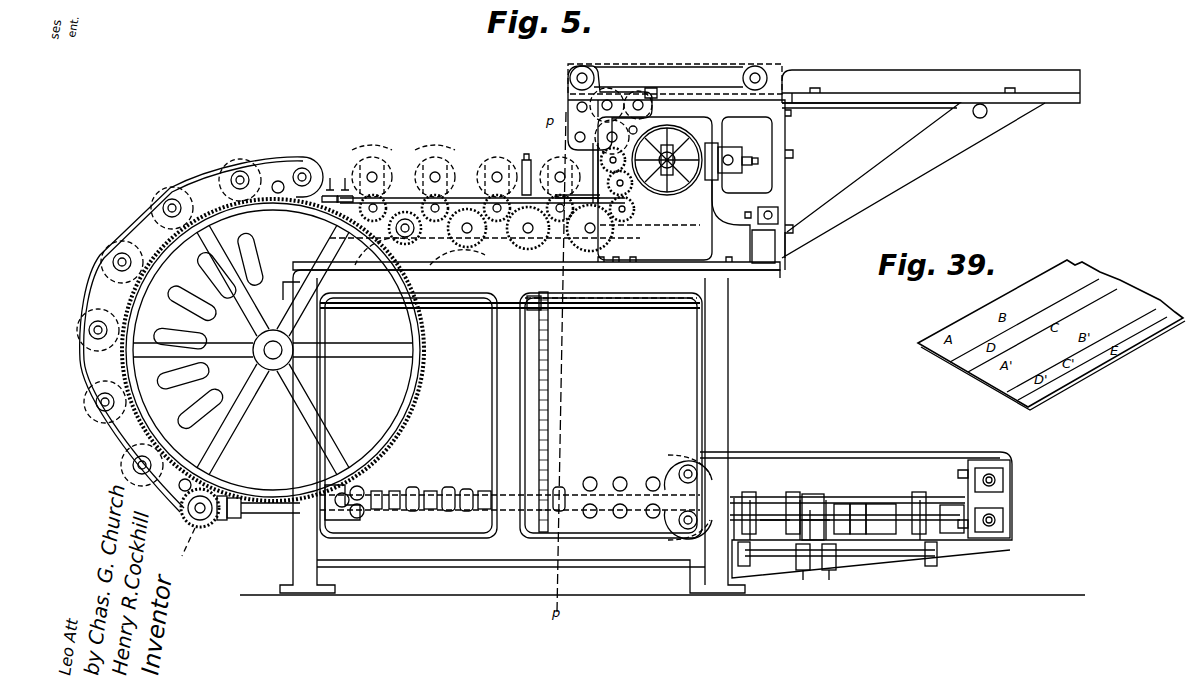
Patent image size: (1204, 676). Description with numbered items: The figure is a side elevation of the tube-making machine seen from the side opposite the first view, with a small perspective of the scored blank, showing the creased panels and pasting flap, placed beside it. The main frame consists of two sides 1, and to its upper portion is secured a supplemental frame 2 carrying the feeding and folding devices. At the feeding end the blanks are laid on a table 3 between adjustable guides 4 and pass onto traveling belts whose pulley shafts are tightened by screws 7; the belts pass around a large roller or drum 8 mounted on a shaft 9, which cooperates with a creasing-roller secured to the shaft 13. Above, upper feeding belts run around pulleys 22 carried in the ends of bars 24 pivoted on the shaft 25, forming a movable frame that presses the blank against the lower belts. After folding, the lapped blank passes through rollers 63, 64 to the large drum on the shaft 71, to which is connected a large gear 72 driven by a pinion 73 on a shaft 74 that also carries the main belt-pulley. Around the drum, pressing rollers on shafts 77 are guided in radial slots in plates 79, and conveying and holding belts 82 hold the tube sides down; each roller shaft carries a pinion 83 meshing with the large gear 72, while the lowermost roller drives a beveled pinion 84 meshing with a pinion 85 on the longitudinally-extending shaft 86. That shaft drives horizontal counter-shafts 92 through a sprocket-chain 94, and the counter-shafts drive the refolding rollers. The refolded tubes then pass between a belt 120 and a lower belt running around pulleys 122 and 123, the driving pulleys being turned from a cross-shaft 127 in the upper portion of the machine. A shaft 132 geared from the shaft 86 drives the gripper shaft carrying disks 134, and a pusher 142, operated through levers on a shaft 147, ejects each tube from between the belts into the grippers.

The side of main frame 1 is at (530, 427).
The supplemental frame 2 is at (622, 235).
The table 3 is at (1043, 100).
The guides 4 is at (931, 86).
The screws 7 is at (742, 212).
The roller or drum 8 is at (660, 190).
The shaft 9 is at (672, 172).
The shaft 13 is at (726, 163).
The pulleys 22 is at (762, 70).
The bars 24 is at (675, 79).
The shaft 25 is at (570, 65).
The roller 63 is at (345, 181).
The roller 64 is at (330, 181).
The shaft 71 is at (285, 356).
The large gear 72 is at (282, 198).
The pinion 73 is at (420, 237).
The shaft 74 is at (405, 222).
The shafts 77 is at (98, 425).
The plates 79 is at (273, 349).
The conveying and holding belts 82 is at (140, 219).
The pinion 83 is at (140, 470).
The beveled pinion 84 is at (188, 512).
The pinion 85 is at (222, 520).
The longitudinally-extending shaft 86 is at (268, 513).
The counter-shafts 92 is at (608, 306).
The sprocket-chain 94 is at (548, 373).
The belt 120 is at (856, 506).
The pulleys 122 is at (676, 466).
The pulleys 123 is at (676, 530).
The cross-shaft 127 is at (586, 232).
The shaft 132 is at (784, 503).
The disks 134 is at (858, 530).
The pusher 142 is at (850, 500).
The shaft 147 is at (872, 558).